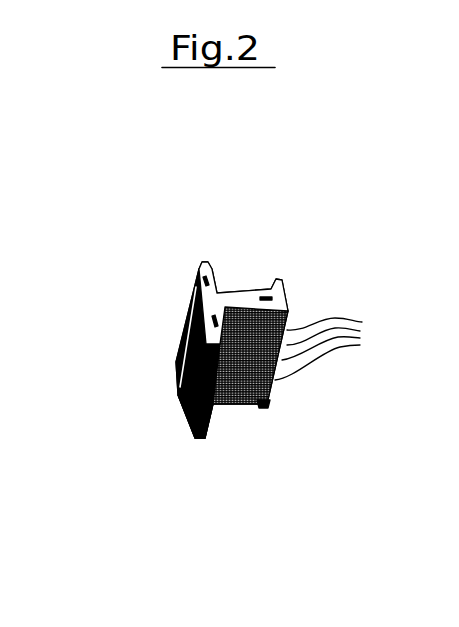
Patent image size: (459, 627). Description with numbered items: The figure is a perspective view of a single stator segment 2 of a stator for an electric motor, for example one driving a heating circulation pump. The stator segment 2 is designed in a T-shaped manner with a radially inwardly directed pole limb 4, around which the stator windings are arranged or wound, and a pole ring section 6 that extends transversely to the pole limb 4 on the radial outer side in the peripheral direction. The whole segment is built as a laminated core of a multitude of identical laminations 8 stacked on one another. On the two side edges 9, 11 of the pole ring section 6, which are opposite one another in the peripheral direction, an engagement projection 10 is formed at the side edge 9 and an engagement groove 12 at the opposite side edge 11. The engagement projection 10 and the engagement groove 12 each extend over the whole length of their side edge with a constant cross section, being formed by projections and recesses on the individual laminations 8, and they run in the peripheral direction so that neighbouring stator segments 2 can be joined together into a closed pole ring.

The stator segment 2 is at (273, 240).
The pole limb 4 is at (238, 404).
The pole ring section 6 is at (182, 380).
The lamination 8 is at (329, 346).
The side edge 9 is at (190, 272).
The engagement projection 10 is at (203, 257).
The side edge 11 is at (193, 440).
The engagement groove 12 is at (198, 438).